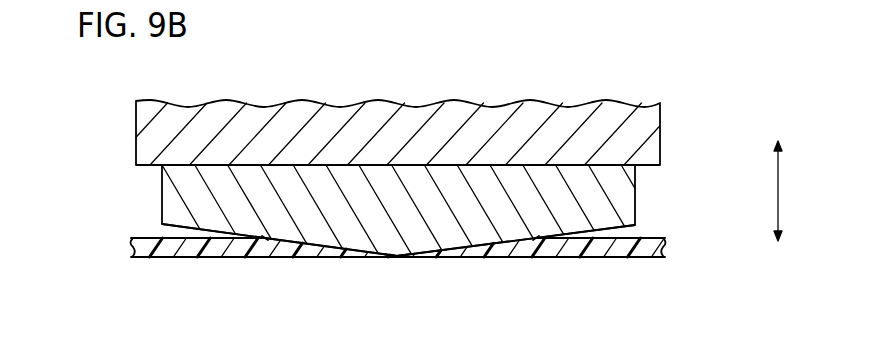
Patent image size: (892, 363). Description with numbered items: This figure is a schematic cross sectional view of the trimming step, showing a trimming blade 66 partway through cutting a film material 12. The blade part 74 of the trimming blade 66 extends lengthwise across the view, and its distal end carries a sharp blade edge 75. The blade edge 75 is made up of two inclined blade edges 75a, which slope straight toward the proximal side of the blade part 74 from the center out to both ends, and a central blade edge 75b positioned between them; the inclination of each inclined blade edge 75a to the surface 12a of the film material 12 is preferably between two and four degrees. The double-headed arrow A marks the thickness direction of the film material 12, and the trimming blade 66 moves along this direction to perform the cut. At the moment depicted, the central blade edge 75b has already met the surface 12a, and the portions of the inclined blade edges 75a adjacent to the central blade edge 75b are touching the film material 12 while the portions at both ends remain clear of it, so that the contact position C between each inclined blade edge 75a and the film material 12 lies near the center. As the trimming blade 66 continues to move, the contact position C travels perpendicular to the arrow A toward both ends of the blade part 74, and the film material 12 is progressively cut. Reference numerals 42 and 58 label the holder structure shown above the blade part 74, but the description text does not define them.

The holding unit 42 is at (431, 201).
The holding member 58 is at (650, 143).
The blade part 74 is at (444, 256).
The trimming blade 66 is at (398, 210).
The blade edge 75 is at (398, 286).
The inclined blade edge 75a is at (333, 258).
The central blade edge 75b is at (402, 286).
The film material 12 is at (426, 253).
The surface of the film material 12a is at (655, 238).
The contact position C is at (263, 258).
The arrow A is at (781, 191).